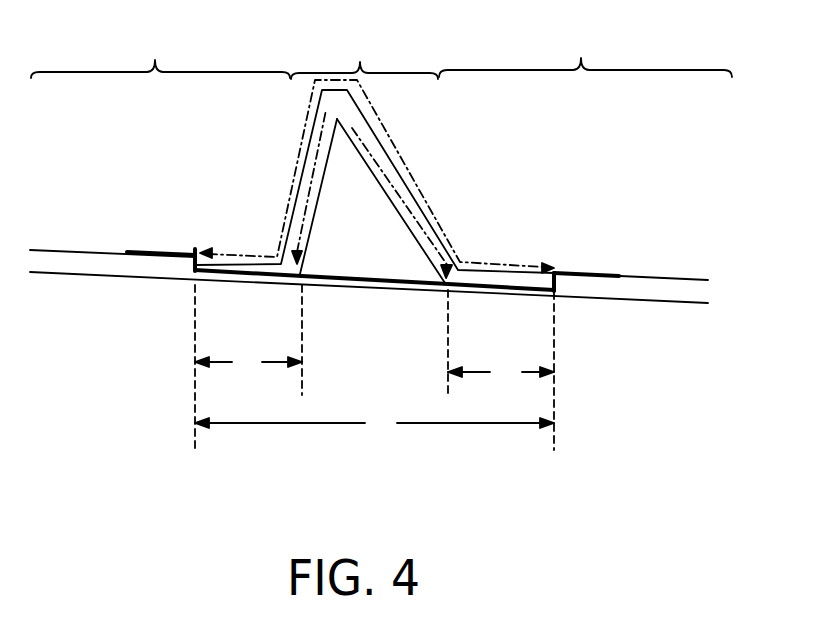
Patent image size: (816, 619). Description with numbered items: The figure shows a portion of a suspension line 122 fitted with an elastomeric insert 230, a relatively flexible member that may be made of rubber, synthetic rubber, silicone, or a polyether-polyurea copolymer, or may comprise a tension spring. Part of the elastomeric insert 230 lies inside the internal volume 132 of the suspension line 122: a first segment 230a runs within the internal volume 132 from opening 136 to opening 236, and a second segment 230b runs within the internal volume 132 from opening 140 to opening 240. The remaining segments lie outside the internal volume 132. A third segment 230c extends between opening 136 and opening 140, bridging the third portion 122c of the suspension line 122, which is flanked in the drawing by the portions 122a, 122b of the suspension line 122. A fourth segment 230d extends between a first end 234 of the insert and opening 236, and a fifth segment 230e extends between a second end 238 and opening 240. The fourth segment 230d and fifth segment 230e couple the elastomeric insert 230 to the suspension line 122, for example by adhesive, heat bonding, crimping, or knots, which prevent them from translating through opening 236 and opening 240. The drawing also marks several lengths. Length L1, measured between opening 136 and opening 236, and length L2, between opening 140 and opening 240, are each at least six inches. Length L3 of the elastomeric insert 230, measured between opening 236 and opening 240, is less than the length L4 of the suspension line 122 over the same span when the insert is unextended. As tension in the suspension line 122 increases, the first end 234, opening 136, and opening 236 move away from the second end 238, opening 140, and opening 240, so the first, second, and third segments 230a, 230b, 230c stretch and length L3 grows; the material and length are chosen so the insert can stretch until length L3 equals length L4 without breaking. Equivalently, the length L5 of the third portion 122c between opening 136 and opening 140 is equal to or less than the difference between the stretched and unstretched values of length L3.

The suspension line 122 is at (660, 280).
The first region of layer 122a is at (585, 47).
The second region of layer 122b is at (160, 50).
The third portion of suspension line 122c is at (364, 48).
The internal volume 132 is at (684, 300).
The opening 136 is at (445, 287).
The opening 140 is at (303, 278).
The elastomeric insert 230 is at (373, 356).
The first segment 230a is at (556, 466).
The second segment 230b is at (298, 466).
The third segment 230c is at (447, 462).
The fourth segment 230d is at (620, 263).
The fifth segment 230e is at (193, 239).
The first end 234 is at (624, 286).
The opening 236 is at (553, 270).
The second end 238 is at (124, 266).
The opening 240 is at (195, 248).
The length L1 is at (501, 370).
The length L2 is at (248, 367).
The length L3 is at (374, 425).
The length L4 is at (423, 193).
The length L5 is at (385, 158).